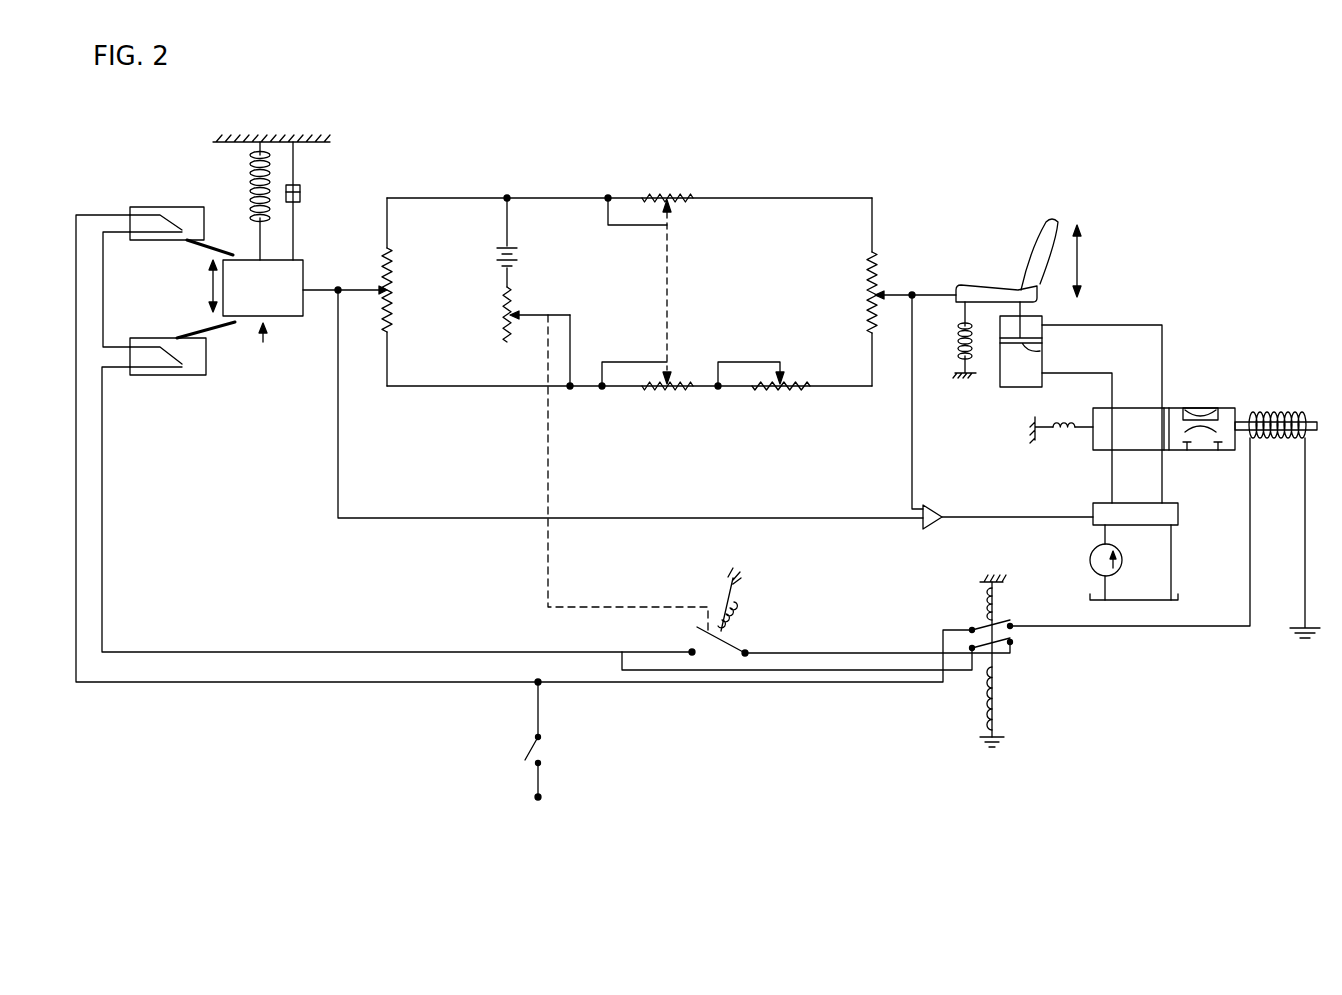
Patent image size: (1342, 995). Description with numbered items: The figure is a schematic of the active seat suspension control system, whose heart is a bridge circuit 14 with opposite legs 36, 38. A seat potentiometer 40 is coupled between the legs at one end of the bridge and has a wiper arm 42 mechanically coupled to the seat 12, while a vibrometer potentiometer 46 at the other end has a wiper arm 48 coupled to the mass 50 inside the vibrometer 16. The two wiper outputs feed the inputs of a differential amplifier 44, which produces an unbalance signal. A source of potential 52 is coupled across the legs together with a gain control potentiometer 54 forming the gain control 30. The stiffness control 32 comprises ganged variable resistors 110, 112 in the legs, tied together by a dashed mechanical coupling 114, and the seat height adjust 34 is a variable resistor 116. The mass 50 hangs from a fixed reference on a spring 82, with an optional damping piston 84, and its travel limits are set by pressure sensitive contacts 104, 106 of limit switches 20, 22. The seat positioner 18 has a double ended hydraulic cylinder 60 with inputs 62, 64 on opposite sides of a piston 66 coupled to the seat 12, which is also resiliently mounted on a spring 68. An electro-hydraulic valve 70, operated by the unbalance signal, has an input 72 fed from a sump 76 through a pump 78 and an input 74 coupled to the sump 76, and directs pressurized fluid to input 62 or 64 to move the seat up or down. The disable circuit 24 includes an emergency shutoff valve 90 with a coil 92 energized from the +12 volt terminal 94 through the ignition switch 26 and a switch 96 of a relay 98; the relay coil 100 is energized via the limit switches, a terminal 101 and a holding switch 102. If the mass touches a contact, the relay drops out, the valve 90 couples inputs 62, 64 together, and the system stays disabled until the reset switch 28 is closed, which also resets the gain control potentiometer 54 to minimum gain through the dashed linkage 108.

The seat 12 is at (1033, 248).
The bridge circuit 14 is at (596, 348).
The vibrometer 16 is at (256, 316).
The seat positioner 18 is at (1079, 502).
The limit switch 20 is at (150, 207).
The limit switch 22 is at (157, 375).
The disable circuit 24 is at (1208, 392).
The ignition switch 26 is at (545, 745).
The reset switch 28 is at (740, 640).
The gain control 30 is at (586, 331).
The stiffness control 32 is at (674, 256).
The seat height adjust 34 is at (780, 392).
The leg 36 is at (447, 198).
The leg 38 is at (490, 388).
The seat potentiometer 40 is at (868, 326).
The wiper arm 42 is at (889, 292).
The differential amplifier 44 is at (933, 528).
The vibrometer potentiometer 46 is at (390, 315).
The wiper arm 48 is at (348, 287).
The mass 50 is at (292, 317).
The source of potential 52 is at (503, 244).
The gain control potentiometer 54 is at (500, 325).
The hydraulic cylinder 60 is at (1044, 368).
The input 62 is at (1058, 324).
The input 64 is at (1055, 374).
The piston 66 is at (1040, 350).
The spring 68 is at (955, 348).
The electro-hydraulic valve 70 is at (1180, 511).
The input 72 is at (1100, 533).
The input 74 is at (1173, 555).
The sump 76 is at (1178, 605).
The pump 78 is at (1090, 559).
The spring 82 is at (250, 172).
The damping piston 84 is at (300, 194).
The emergency shutoff valve 90 is at (1167, 408).
The coil 92 is at (1288, 412).
The terminal 94 is at (534, 797).
The switch 96 is at (975, 625).
The relay 98 is at (1016, 668).
The relay coil 100 is at (1002, 706).
The terminal 101 is at (622, 650).
The switch 102 is at (1015, 644).
The pressure sensitive contact 104 is at (185, 256).
The pressure sensitive contact 106 is at (186, 322).
The mechanical linkage 108 is at (557, 576).
The variable resistor 110 is at (671, 195).
The variable resistor 112 is at (667, 392).
The mechanical coupling 114 is at (669, 328).
The variable resistor 116 is at (798, 380).